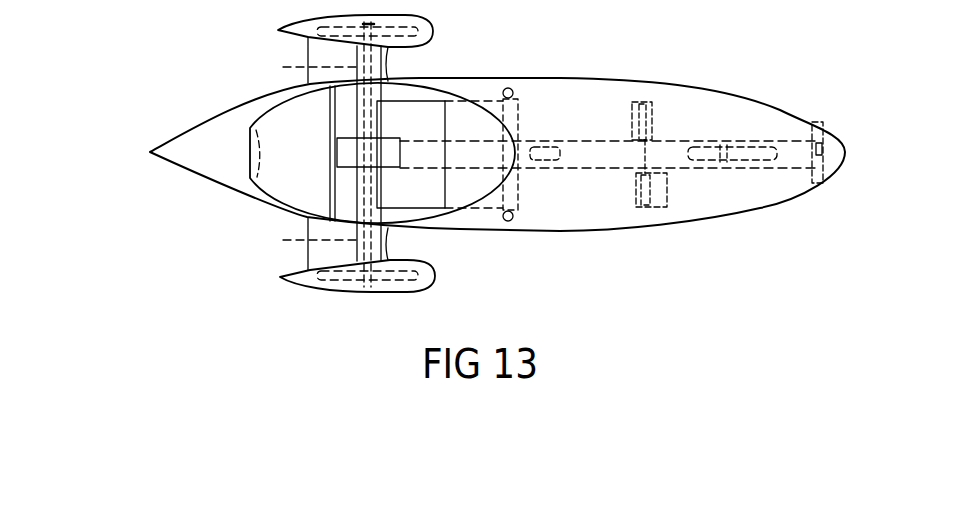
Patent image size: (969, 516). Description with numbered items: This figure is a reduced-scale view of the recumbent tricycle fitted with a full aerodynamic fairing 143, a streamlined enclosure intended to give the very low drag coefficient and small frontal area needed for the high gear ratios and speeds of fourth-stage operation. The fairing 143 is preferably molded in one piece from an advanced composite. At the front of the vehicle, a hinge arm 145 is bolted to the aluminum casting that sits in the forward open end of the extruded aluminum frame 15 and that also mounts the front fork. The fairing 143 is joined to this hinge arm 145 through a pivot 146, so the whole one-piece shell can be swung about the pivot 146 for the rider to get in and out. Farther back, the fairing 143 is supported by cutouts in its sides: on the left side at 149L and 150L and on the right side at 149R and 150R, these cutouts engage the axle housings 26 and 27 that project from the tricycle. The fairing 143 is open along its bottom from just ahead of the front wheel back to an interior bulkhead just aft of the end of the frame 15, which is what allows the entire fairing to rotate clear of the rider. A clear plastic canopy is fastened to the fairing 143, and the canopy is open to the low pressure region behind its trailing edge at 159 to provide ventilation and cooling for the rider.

The extruded aluminum frame 15 is at (587, 143).
The axle housing 26 is at (303, 66).
The axle housing 27 is at (303, 240).
The fairing 143 is at (653, 230).
The hinge arm 145 is at (790, 170).
The pivot 146 is at (817, 130).
The fairing cutout 149L is at (392, 52).
The fairing cutout 149R is at (392, 235).
The fairing cutout 150L is at (418, 50).
The fairing cutout 150R is at (420, 258).
The trailing edge of the canopy 159 is at (249, 160).